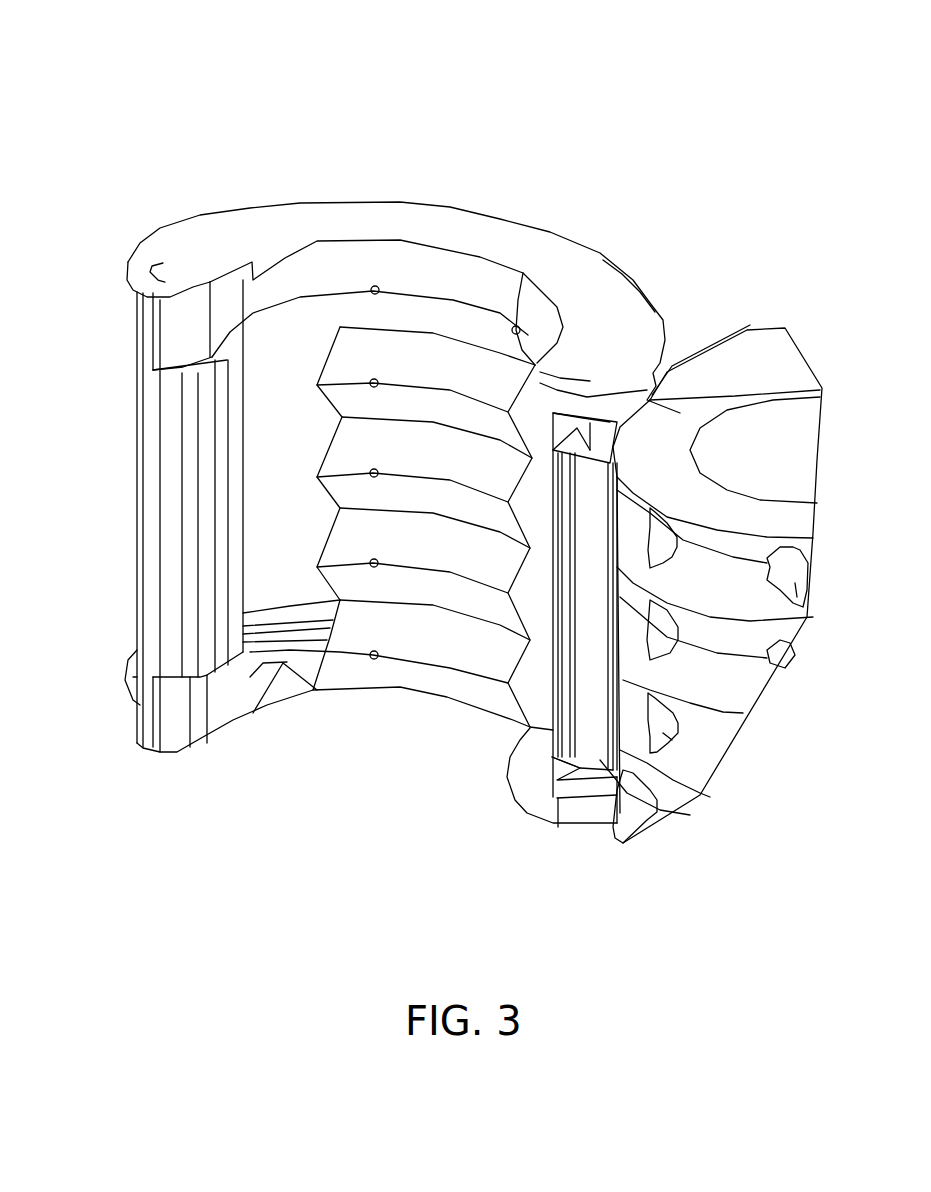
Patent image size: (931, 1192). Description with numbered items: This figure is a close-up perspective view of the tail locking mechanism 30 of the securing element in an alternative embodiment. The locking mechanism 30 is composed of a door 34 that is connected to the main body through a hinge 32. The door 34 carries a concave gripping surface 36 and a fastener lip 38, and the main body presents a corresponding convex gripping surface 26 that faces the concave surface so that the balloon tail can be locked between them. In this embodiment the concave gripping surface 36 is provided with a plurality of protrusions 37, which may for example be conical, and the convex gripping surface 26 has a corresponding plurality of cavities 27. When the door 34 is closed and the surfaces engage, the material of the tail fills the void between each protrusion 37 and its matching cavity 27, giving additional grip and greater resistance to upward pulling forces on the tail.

The convex gripping surface 26 is at (711, 590).
The cavities 27 is at (723, 693).
The tail locking mechanism 30 is at (435, 467).
The hinge 32 is at (371, 711).
The door 34 is at (403, 279).
The concave gripping surface 36 is at (392, 391).
The protrusions 37 is at (448, 441).
The fastener lip 38 is at (140, 516).